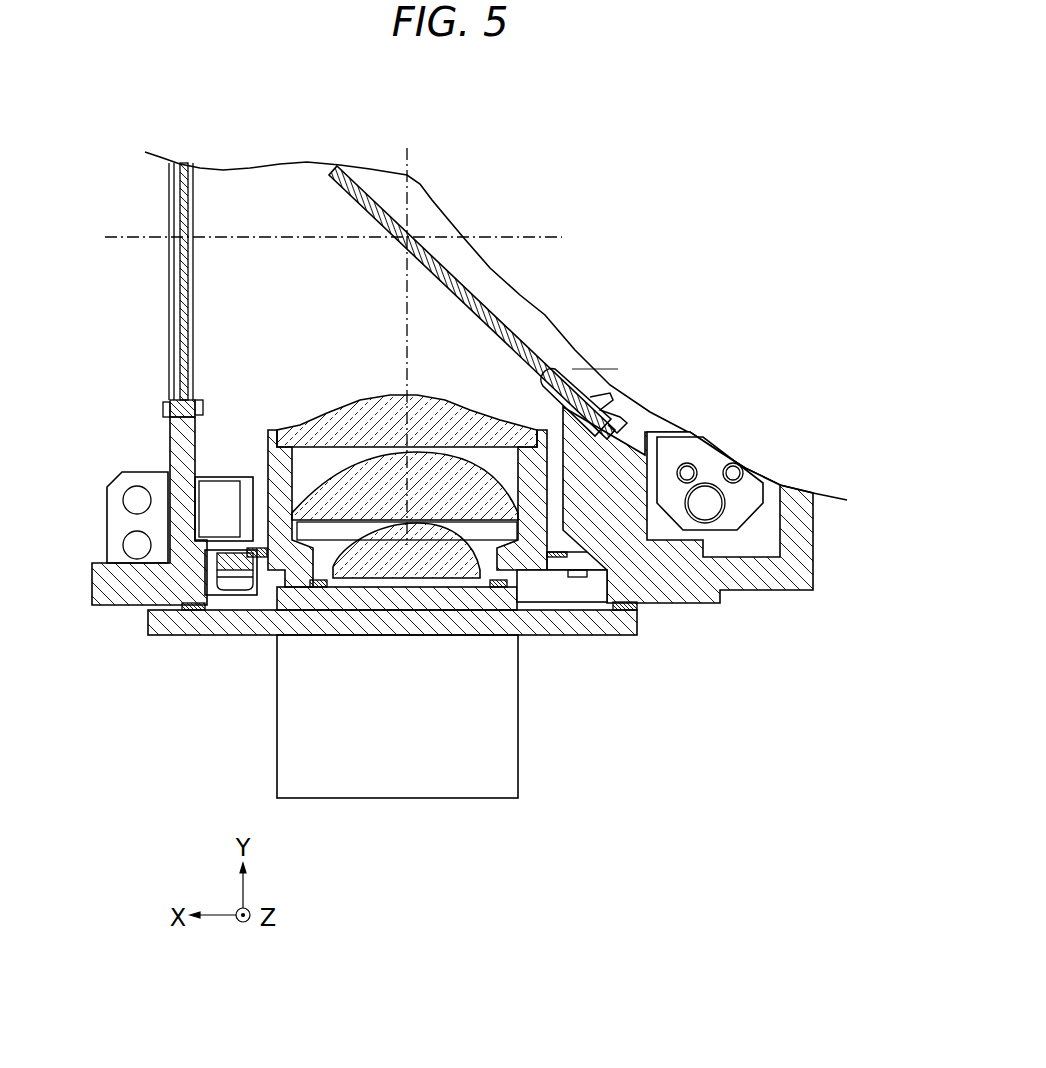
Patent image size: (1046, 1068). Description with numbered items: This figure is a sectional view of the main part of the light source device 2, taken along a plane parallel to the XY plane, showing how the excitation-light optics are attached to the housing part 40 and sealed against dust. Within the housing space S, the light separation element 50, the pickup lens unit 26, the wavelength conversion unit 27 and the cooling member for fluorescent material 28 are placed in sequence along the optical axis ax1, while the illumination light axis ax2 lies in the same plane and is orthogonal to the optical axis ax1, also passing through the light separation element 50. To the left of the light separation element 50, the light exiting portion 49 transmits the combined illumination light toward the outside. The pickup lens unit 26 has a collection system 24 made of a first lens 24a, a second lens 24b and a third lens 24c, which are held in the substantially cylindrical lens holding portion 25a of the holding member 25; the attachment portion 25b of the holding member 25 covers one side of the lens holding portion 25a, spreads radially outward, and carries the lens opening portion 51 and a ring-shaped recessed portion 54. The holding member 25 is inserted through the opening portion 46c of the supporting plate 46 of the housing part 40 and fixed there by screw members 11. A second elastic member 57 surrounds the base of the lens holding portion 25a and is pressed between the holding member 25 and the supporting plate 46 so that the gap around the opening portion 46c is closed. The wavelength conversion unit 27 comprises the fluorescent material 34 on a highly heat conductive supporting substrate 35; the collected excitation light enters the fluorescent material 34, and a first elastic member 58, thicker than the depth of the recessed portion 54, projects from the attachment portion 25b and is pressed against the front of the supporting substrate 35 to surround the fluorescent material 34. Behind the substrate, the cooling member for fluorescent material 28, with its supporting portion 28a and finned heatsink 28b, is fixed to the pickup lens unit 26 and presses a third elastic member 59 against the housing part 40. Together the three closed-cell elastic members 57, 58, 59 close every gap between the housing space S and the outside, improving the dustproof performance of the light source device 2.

The light source device 2 is at (703, 218).
The housing space S is at (268, 208).
The optical axis ax1 is at (407, 163).
The illumination light axis ax2 is at (545, 237).
The light separation element 50 is at (368, 182).
The light exiting portion 49 is at (172, 330).
The supporting plate 46 is at (227, 547).
The opening portion 46c is at (283, 516).
The screw members 11 is at (237, 592).
The third elastic member 59 is at (195, 613).
The second elastic member 57 is at (265, 595).
The collection system 24 is at (388, 304).
The first lens 24a is at (317, 430).
The second lens 24b is at (340, 482).
The third lens 24c is at (365, 550).
The first elastic member 58 is at (313, 593).
The lens opening portion 51 is at (370, 600).
The wavelength conversion unit 27 is at (407, 845).
The fluorescent material 34 is at (421, 592).
The supporting substrate 35 is at (472, 617).
The ring-shaped recessed portion 54 is at (522, 615).
The housing part 40 is at (803, 603).
The pickup lens unit 26 is at (543, 416).
The holding member 25 is at (742, 618).
The lens holding portion 25a is at (525, 580).
The attachment portion 25b is at (587, 617).
The cooling member for fluorescent material 28 is at (702, 700).
The supporting portion 28a is at (563, 632).
The heatsink 28b is at (510, 716).